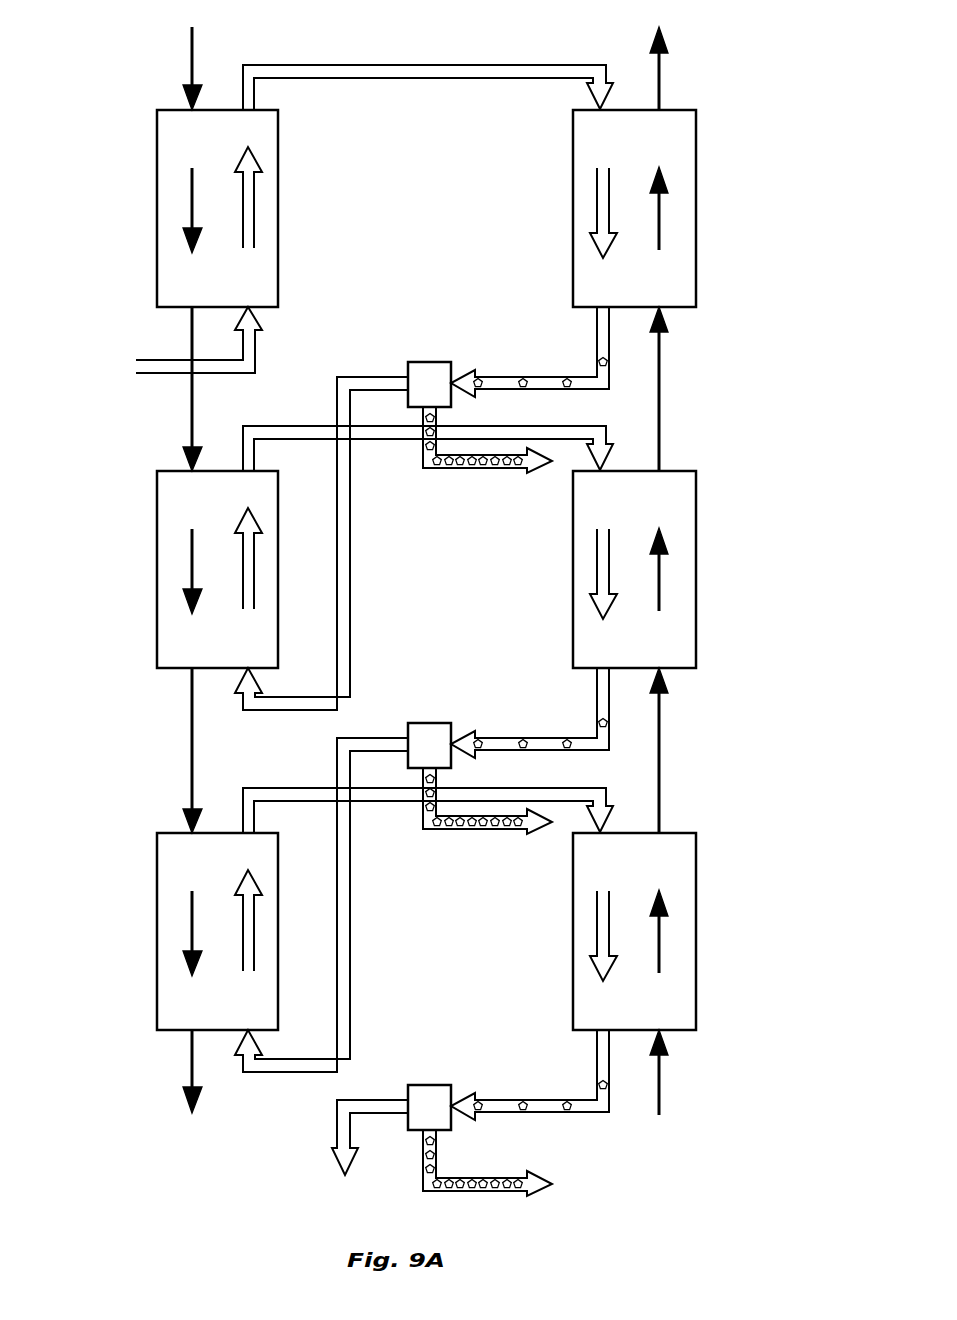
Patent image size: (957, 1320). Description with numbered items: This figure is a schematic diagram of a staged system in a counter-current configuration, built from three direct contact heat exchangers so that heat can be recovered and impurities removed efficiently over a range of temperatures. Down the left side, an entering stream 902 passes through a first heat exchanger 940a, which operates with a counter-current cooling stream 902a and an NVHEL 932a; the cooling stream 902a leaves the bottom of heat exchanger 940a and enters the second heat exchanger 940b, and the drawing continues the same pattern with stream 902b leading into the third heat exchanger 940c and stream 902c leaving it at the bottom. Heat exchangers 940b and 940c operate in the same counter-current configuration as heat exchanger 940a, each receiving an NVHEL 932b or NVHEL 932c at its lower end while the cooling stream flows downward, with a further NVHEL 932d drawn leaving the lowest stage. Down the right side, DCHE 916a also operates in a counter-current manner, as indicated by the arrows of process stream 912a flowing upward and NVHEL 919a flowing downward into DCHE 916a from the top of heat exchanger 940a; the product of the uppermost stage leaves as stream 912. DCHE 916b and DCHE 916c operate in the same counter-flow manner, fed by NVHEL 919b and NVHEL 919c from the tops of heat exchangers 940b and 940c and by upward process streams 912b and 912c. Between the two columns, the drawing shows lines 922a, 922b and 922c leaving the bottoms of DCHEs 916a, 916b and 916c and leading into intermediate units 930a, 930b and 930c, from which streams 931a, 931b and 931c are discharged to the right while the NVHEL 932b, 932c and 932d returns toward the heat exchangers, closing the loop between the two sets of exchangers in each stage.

The feed stream 902 is at (192, 55).
The counter-current cooling stream 902a is at (192, 343).
The feed stream to third stage 902b is at (192, 705).
The depleted feed stream outlet 902c is at (192, 1067).
The product stream 912 is at (661, 75).
The process stream 912a is at (661, 362).
The product stream from third stage 912b is at (661, 722).
The product stream inlet 912c is at (661, 1085).
The heat exchanger 940a is at (157, 150).
The heat exchanger 940b is at (157, 512).
The heat exchanger 940c is at (157, 875).
The DCHE 916a is at (696, 172).
The DCHE 916b is at (696, 533).
The DCHE 916c is at (696, 897).
The NVHEL 919a is at (510, 65).
The second stage transfer line 919b is at (510, 426).
The third stage transfer line 919c is at (510, 788).
The first stage slurry return line 922a is at (545, 377).
The second stage slurry return line 922b is at (545, 738).
The third stage slurry return line 922c is at (545, 1100).
The first stage separator 930a is at (430, 362).
The second stage separator 930b is at (430, 723).
The third stage separator 930c is at (430, 1085).
The first stage solids outlet stream 931a is at (450, 470).
The second stage solids outlet stream 931b is at (450, 832).
The third stage solids outlet stream 931c is at (423, 1160).
The NVHEL 932a is at (255, 352).
The recycle liquid stream to second stage 932b is at (255, 714).
The recycle liquid stream to third stage 932c is at (255, 1076).
The liquid outlet stream 932d is at (337, 763).